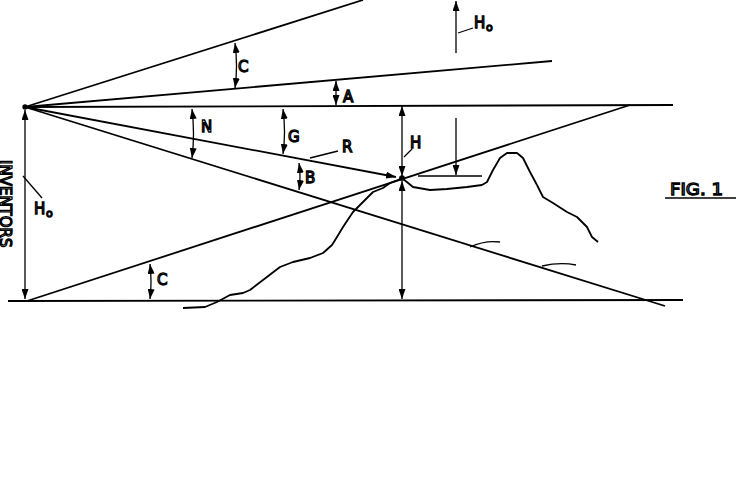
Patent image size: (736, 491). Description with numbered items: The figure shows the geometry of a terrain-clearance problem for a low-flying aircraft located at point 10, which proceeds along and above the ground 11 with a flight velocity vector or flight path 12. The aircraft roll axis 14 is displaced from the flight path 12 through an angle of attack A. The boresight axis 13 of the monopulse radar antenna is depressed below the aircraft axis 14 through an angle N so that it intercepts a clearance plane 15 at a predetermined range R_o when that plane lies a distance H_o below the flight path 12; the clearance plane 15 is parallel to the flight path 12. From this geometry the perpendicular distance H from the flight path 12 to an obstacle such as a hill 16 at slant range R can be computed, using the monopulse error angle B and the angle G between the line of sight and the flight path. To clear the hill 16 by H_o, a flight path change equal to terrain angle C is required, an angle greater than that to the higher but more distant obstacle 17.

The aircraft point 10 is at (25, 106).
The ground 11 is at (293, 263).
The flight path 12 is at (565, 103).
The boresight axis 13 is at (228, 170).
The aircraft roll axis 14 is at (363, 77).
The clearance plane 15 is at (430, 298).
The hill 16 is at (405, 183).
The obstacle 17 is at (523, 152).